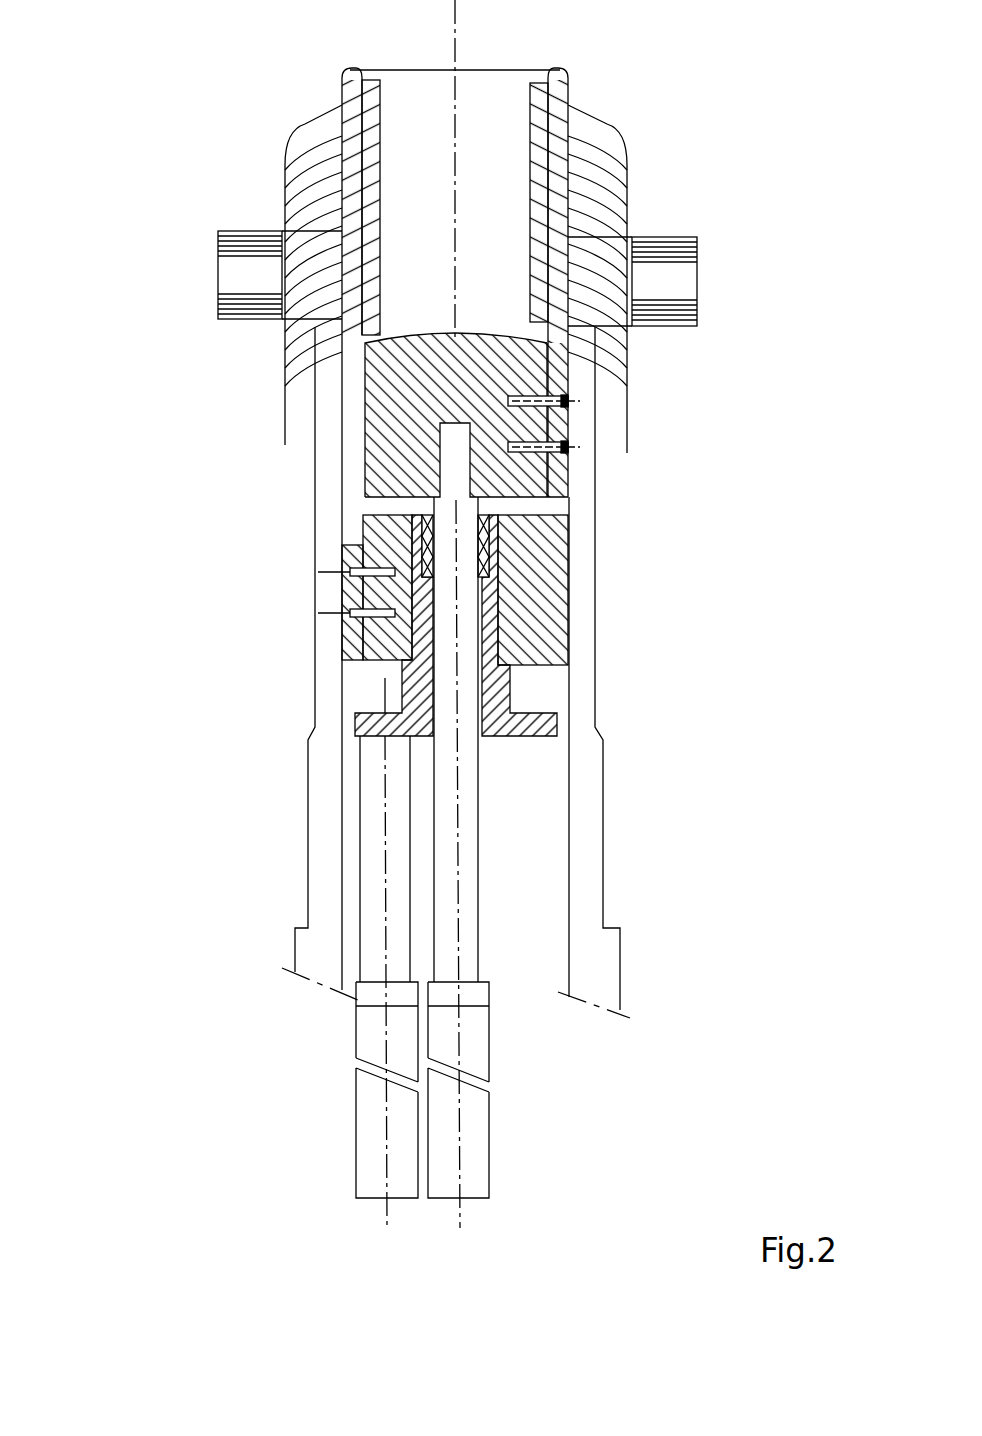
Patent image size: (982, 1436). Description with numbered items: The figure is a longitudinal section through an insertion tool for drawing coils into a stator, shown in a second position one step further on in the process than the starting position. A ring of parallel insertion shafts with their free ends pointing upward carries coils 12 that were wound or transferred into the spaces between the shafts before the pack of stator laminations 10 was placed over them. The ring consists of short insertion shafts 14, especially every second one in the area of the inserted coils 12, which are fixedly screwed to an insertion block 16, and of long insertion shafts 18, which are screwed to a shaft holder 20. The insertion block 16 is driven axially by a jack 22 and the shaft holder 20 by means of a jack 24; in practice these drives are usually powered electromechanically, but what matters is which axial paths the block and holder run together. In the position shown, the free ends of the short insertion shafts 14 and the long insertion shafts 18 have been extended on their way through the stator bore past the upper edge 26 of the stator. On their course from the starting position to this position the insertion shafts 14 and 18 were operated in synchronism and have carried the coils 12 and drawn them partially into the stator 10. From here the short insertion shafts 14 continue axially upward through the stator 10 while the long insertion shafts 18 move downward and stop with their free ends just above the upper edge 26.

The pack of stator laminations 10 is at (672, 282).
The coils 12 is at (633, 371).
The short insertion shafts 14 is at (556, 88).
The insertion block 16 is at (532, 427).
The long insertion shafts 18 is at (350, 84).
The shaft holder 20 is at (375, 527).
The jack 22 is at (476, 1131).
The jack 24 is at (375, 1127).
The upper edge of the stator 26 is at (663, 236).